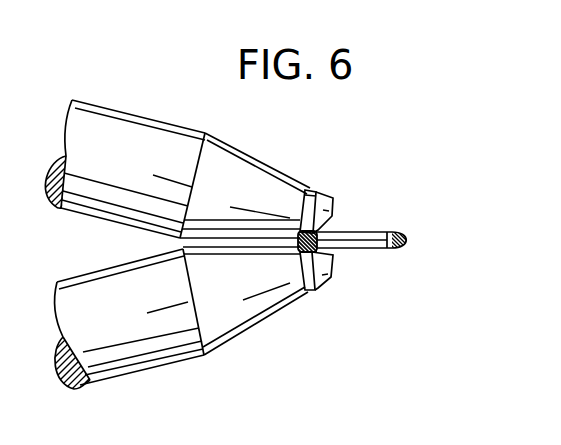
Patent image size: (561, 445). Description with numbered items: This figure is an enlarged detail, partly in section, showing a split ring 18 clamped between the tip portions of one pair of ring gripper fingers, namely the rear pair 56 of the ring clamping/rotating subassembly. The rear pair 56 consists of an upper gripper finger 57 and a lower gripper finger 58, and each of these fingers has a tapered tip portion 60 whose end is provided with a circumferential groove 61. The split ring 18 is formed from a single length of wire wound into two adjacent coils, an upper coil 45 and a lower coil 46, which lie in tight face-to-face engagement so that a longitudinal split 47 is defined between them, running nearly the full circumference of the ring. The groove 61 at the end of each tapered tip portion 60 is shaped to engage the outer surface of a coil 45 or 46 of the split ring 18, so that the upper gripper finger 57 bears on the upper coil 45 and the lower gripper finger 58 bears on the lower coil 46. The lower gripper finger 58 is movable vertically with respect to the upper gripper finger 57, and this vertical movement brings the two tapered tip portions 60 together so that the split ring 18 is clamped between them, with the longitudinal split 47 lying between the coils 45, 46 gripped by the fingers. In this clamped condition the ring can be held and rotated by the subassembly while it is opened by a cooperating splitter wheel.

The split ring 18 is at (356, 231).
The upper coil 45 is at (302, 213).
The lower coil 46 is at (300, 253).
The longitudinal split 47 is at (358, 249).
The rear pair of gripper fingers 56 is at (110, 249).
The upper gripper finger 57 is at (130, 132).
The lower gripper finger 58 is at (132, 352).
The tapered tip portion 60 is at (218, 155).
The circumferential groove 61 is at (312, 190).